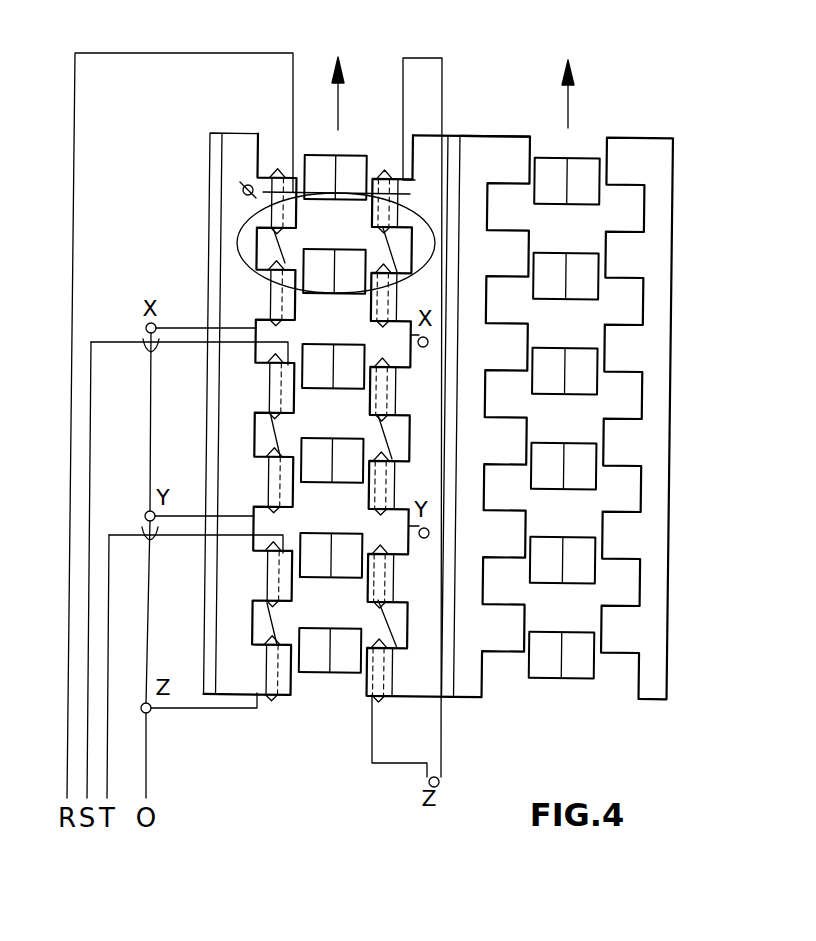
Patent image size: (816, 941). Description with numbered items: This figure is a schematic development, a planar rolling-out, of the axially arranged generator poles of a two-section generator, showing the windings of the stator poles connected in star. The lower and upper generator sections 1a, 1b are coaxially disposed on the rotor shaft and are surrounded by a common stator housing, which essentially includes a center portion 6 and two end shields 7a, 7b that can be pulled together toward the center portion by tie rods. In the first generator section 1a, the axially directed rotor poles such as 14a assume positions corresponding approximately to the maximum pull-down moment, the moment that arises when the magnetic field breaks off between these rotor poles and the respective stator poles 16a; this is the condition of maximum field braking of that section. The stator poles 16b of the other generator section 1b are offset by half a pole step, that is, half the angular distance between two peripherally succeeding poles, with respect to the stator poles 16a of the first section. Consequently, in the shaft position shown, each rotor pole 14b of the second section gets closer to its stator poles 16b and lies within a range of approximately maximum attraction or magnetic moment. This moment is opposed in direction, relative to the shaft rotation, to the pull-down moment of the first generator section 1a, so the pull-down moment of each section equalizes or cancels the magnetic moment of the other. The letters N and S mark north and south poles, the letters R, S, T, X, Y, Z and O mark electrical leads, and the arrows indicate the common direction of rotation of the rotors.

The lower generator section 1a is at (352, 444).
The upper generator section 1b is at (572, 450).
The center portion 6 is at (463, 150).
The end shield 7a is at (236, 147).
The end shield 7b is at (647, 152).
The axially directed rotor pole 14a is at (339, 155).
The rotor pole 14b is at (574, 163).
The stator pole 16a is at (418, 685).
The stator pole 16b is at (492, 638).